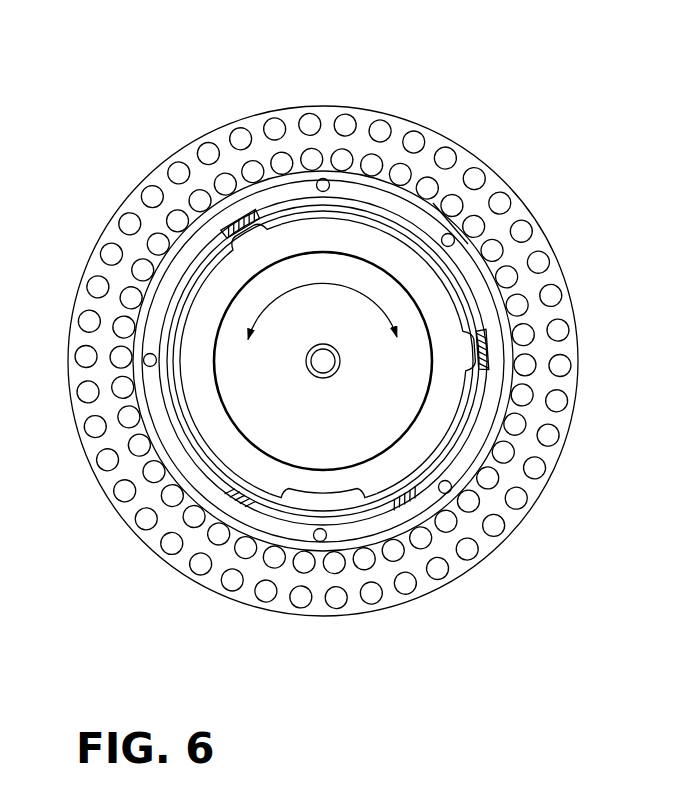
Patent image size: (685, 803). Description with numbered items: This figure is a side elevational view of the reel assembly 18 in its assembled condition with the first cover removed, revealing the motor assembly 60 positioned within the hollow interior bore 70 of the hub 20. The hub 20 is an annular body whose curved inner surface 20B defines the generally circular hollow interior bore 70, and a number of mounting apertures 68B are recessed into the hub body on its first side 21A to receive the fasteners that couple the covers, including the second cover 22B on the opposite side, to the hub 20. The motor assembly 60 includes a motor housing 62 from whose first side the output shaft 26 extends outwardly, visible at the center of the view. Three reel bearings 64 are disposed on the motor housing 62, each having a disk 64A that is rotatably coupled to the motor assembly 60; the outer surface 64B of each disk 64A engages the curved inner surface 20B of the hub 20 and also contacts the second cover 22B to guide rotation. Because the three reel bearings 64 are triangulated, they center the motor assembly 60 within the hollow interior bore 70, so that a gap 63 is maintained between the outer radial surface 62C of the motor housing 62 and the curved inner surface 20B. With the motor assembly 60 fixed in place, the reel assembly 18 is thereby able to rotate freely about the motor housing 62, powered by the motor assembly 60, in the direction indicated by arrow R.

The reel assembly 18 is at (527, 127).
The hub 20 is at (490, 253).
The curved inner surface 20B is at (183, 235).
The first side 21A is at (478, 230).
The second cover 22B is at (565, 250).
The output shaft 26 is at (317, 380).
The motor assembly 60 is at (483, 303).
The motor housing 62 is at (240, 455).
The outer radial surface 62C is at (210, 278).
The gap 63 is at (167, 370).
The reel bearing 64 is at (277, 191).
The disk 64A is at (240, 222).
The outer surface 64B is at (258, 212).
The mounting apertures 68B is at (327, 178).
The hollow interior bore 70 is at (402, 498).
The arrow R is at (348, 283).